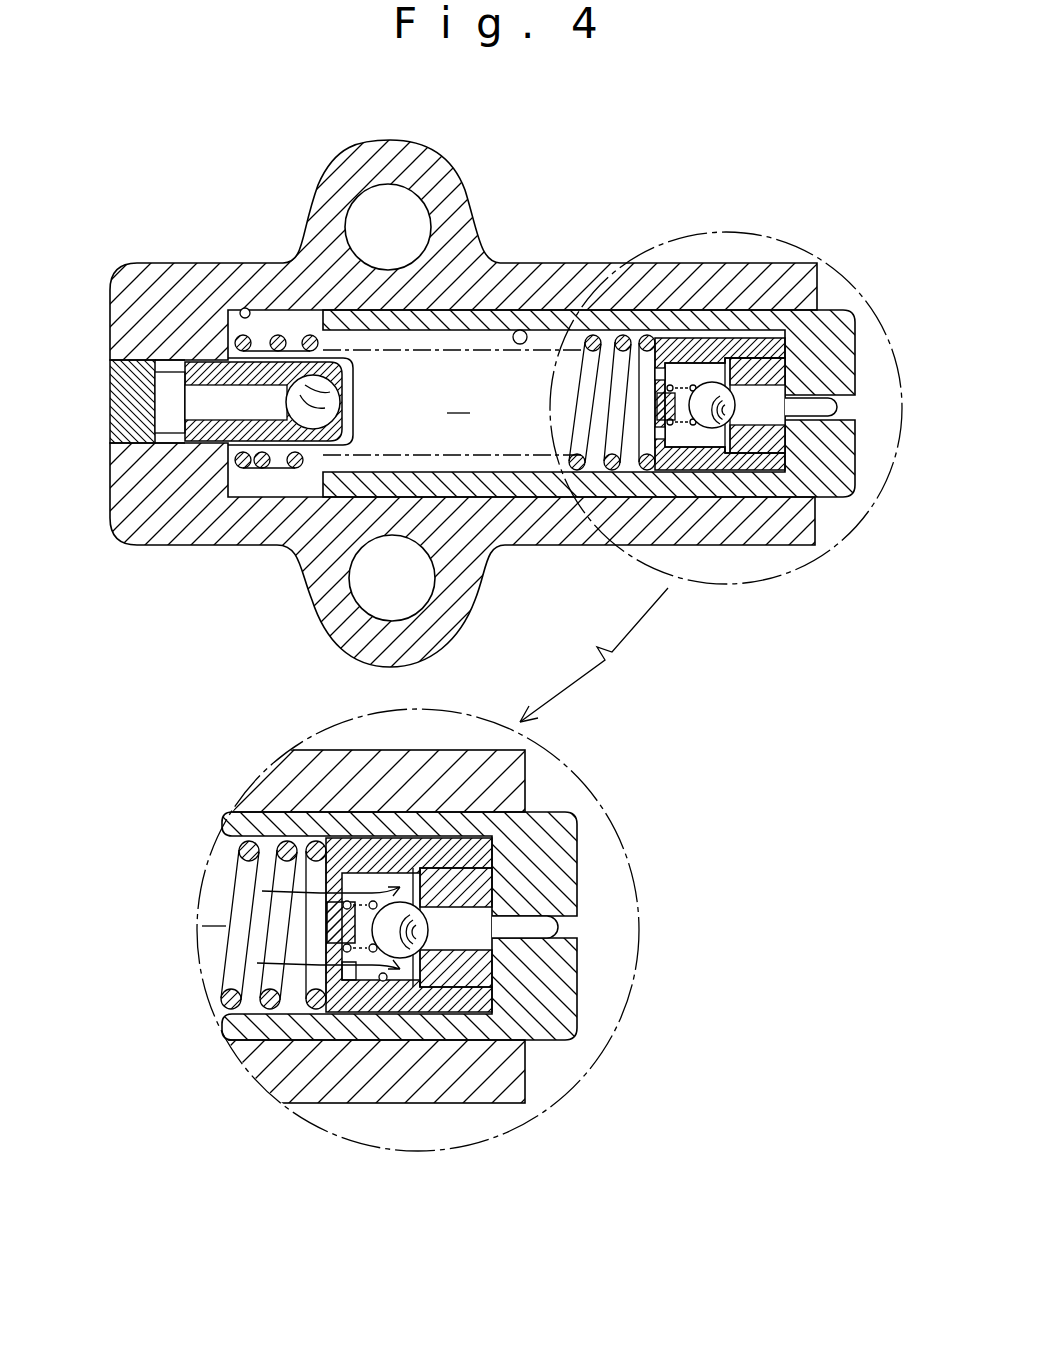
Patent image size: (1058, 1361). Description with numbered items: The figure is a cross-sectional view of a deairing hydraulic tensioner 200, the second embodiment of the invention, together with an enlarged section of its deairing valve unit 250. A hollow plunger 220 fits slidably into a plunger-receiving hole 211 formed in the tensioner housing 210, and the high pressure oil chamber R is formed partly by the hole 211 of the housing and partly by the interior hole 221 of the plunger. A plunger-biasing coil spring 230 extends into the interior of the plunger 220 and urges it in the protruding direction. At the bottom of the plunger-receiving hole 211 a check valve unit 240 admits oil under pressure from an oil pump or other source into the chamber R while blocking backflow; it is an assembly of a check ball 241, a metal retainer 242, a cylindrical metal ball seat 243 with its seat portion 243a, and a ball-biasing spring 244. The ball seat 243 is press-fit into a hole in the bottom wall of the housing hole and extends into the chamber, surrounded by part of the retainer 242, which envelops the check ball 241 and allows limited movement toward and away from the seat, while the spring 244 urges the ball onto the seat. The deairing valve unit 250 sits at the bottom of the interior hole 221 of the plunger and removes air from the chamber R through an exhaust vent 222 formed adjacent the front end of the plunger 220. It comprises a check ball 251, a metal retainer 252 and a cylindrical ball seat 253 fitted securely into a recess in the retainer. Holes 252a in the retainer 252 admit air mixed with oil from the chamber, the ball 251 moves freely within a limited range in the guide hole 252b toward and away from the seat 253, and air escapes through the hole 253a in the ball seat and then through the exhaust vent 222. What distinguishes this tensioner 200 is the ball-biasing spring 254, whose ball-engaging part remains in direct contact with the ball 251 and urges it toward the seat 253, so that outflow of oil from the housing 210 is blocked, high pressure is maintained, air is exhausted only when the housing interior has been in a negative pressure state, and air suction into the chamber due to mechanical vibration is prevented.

The deairing hydraulic tensioner 200 is at (647, 118).
The tensioner housing 210 is at (582, 273).
The plunger-receiving hole 211 is at (245, 309).
The plunger 220 is at (847, 348).
The interior hole 221 is at (520, 331).
The exhaust vent 222 is at (840, 410).
The plunger-biasing coil spring 230 is at (618, 472).
The check valve unit 240 is at (303, 598).
The check ball 241 is at (262, 435).
The metal retainer 242 is at (238, 465).
The cylindrical metal ball seat 243 is at (140, 444).
The retainer 243a is at (205, 393).
The ball-biasing spring 244 is at (308, 428).
The deairing valve unit 250 is at (893, 618).
The check ball 251 is at (716, 432).
The metal retainer 252 is at (765, 445).
The holes 252a is at (361, 990).
The guide hole 252b is at (389, 984).
The cylindrical ball seat 253 is at (790, 452).
The hole 253a is at (491, 893).
The ball-biasing spring 254 is at (712, 455).